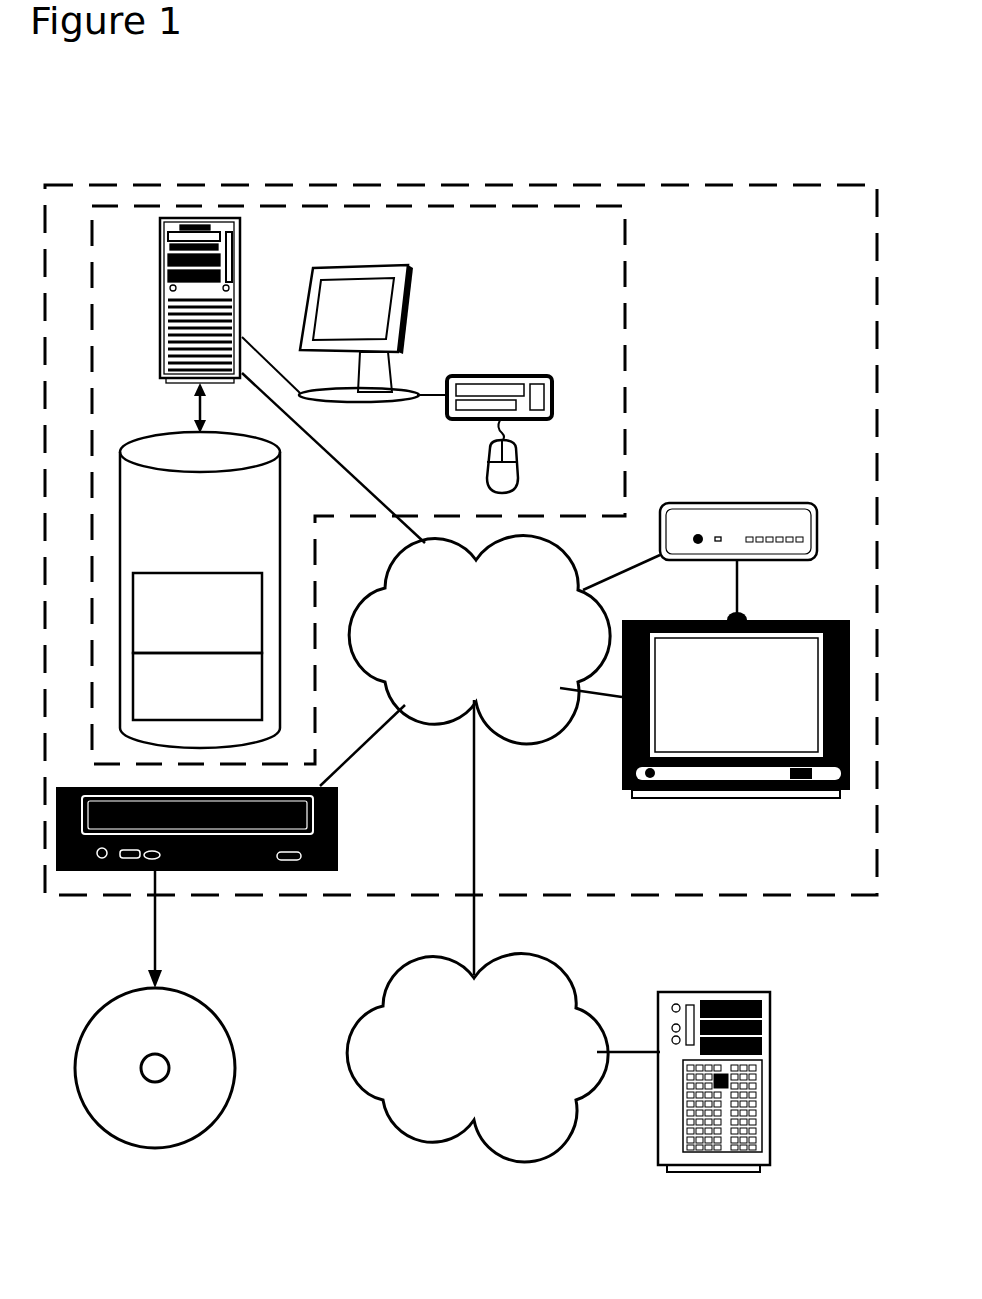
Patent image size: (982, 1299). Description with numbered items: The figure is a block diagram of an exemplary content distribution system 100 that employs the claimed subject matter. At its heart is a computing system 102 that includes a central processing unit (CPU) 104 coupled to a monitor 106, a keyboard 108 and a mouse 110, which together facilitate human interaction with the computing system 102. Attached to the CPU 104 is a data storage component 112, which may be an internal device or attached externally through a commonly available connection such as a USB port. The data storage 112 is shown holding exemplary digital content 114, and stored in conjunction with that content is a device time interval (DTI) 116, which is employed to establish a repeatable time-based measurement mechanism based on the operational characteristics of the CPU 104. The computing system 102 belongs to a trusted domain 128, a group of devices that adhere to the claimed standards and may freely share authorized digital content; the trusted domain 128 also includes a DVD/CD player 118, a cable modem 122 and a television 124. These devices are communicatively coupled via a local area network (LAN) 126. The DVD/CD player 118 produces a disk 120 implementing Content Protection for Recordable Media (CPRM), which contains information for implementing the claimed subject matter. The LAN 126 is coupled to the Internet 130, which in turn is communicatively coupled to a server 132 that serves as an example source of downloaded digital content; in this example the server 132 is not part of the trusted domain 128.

The content distribution system 100 is at (393, 150).
The computing system 102 is at (237, 205).
The central processing unit 104 is at (243, 263).
The monitor 106 is at (410, 308).
The keyboard 108 is at (500, 375).
The mouse 110 is at (487, 465).
The data storage component 112 is at (184, 555).
The digital content 114 is at (181, 650).
The device time interval 116 is at (184, 710).
The DVD/CD player 118 is at (200, 870).
The CPRM disk 120 is at (139, 1045).
The cable modem 122 is at (737, 503).
The television 124 is at (742, 800).
The local area network 126 is at (460, 655).
The trusted domain 128 is at (708, 185).
The Internet 130 is at (456, 1073).
The server 132 is at (713, 991).